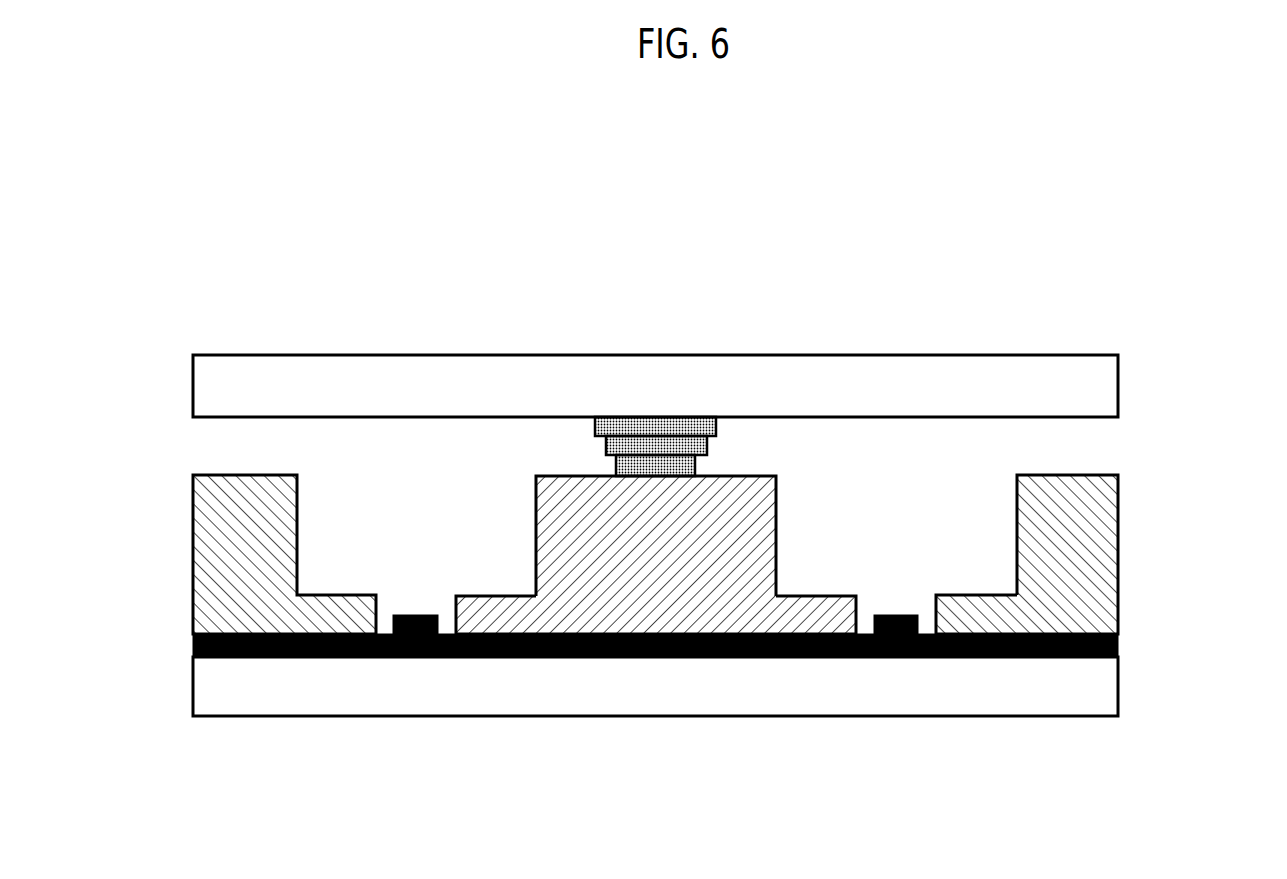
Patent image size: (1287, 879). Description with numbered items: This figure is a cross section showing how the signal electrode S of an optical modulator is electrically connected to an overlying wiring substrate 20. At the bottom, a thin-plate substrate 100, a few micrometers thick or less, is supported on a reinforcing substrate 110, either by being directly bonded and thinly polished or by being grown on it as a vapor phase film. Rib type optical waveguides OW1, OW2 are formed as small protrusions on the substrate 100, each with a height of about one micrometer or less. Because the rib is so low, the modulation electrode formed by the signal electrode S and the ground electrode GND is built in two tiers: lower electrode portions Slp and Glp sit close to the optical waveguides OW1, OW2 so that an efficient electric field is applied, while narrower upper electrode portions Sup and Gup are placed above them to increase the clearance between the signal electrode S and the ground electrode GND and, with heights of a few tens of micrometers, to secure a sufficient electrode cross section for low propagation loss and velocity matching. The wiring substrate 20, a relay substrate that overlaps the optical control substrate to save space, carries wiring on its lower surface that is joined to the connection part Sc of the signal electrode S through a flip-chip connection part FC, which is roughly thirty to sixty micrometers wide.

The wiring substrate 20 is at (980, 388).
The substrate 100 is at (610, 658).
The reinforcing substrate 110 is at (888, 688).
The ground electrode GND is at (202, 468).
The upper electrode portion of the ground electrode Gup is at (1087, 533).
The lower electrode portion of the ground electrode Glp is at (1006, 604).
The connection part of the signal electrode Sc is at (636, 434).
The upper electrode portion of the signal electrode Sup is at (565, 515).
The lower electrode portion of the signal electrode Slp is at (530, 607).
The flip-chip connection part FC is at (635, 436).
The signal electrode S is at (760, 467).
The optical waveguide OW1 is at (398, 613).
The optical waveguide OW2 is at (877, 613).